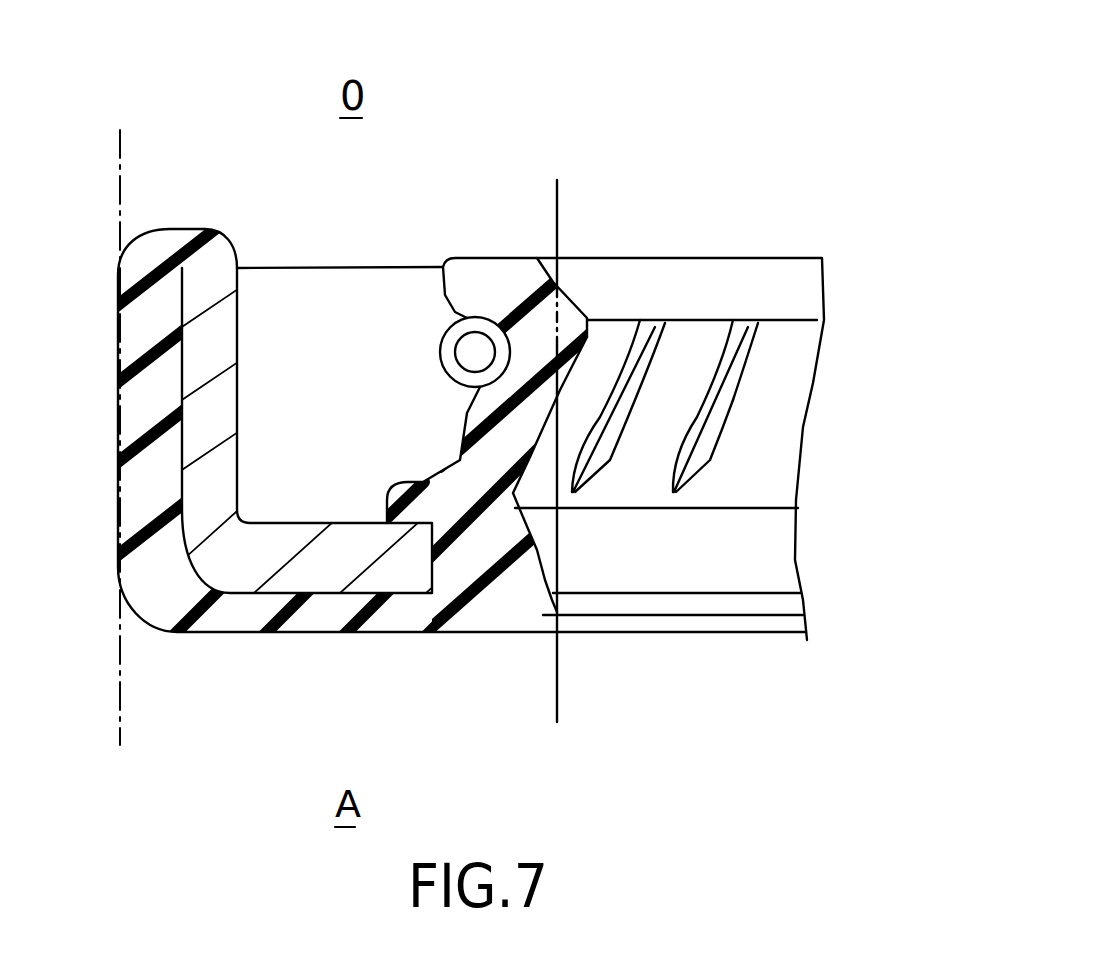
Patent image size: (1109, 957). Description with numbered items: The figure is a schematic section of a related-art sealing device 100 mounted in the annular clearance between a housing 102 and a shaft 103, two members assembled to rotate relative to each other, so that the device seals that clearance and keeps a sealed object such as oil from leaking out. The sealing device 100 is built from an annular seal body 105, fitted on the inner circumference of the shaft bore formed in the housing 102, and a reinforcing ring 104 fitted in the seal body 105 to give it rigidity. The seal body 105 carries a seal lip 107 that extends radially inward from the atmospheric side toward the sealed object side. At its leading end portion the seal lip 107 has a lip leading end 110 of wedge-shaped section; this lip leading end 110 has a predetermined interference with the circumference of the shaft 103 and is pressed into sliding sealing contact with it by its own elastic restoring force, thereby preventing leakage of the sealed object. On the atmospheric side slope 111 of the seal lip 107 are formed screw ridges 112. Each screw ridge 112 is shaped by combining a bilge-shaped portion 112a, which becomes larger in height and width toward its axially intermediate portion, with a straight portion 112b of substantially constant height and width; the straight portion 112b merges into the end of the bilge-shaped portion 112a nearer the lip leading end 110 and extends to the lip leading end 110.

The sealing device 100 is at (468, 130).
The housing 102 is at (122, 174).
The shaft 103 is at (560, 200).
The reinforcing ring 104 is at (243, 553).
The seal body 105 is at (466, 572).
The seal lip 107 is at (488, 280).
The lip leading end 110 is at (590, 320).
The atmospheric side slope 111 is at (640, 480).
The screw ridges 112 is at (746, 427).
The bilge-shaped portion 112a is at (710, 453).
The straight portion 112b is at (757, 340).